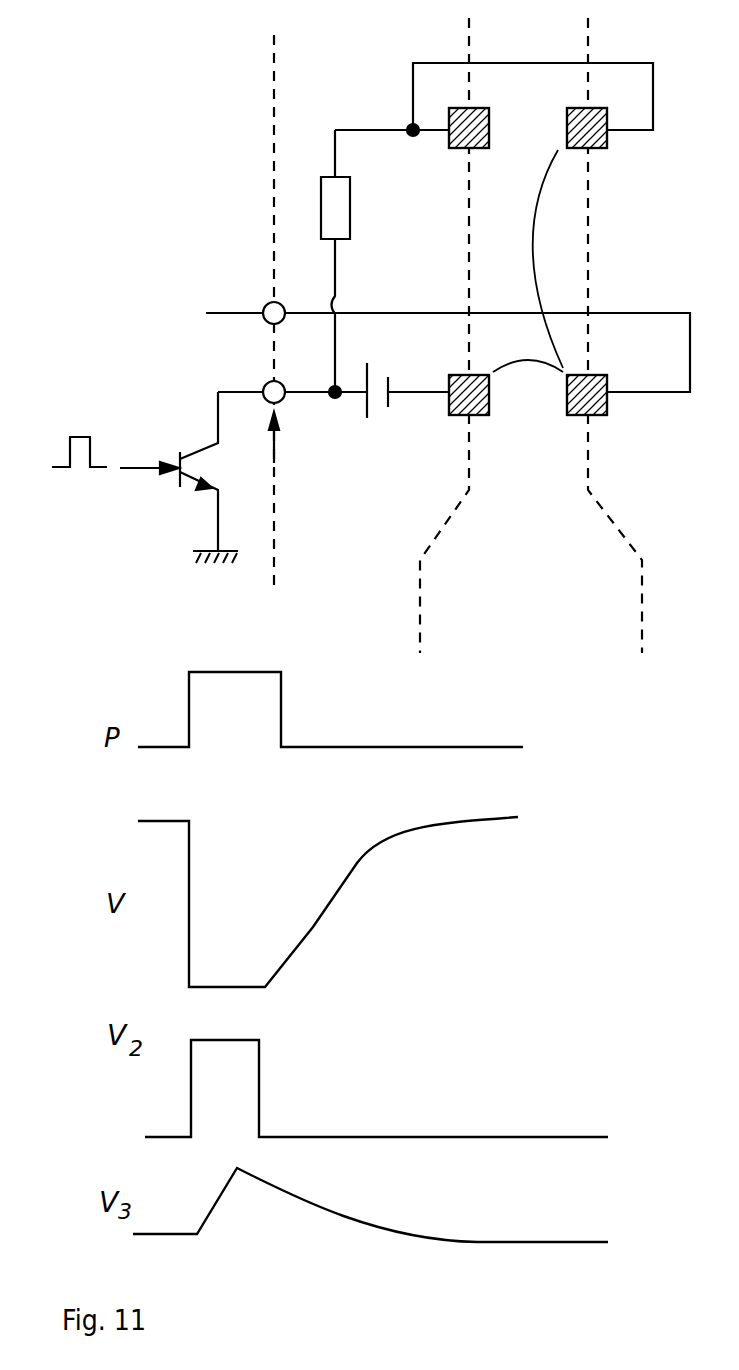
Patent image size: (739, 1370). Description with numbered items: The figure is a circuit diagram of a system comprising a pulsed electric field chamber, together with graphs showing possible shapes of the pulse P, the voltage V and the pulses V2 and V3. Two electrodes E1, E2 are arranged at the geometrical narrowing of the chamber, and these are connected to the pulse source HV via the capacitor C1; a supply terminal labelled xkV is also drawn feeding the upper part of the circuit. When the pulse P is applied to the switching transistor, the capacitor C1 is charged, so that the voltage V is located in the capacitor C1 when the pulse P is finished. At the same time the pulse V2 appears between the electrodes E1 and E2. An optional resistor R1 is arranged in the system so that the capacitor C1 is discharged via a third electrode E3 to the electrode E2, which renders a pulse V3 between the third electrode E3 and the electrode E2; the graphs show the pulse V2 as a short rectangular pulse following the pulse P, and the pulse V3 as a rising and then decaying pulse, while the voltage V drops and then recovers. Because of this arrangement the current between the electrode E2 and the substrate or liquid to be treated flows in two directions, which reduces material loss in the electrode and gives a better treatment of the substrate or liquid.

The resistor R1 is at (314, 261).
The capacitor C1 is at (403, 413).
The electrode E1 is at (456, 420).
The electrode E2 is at (602, 424).
The third electrode E3 is at (554, 153).
The voltage V is at (273, 453).
The pulse V2 is at (528, 348).
The pulse V3 is at (554, 259).
The pulse P is at (79, 475).
The pulse source HV is at (289, 374).
The x kV supply terminal xkV is at (405, 346).